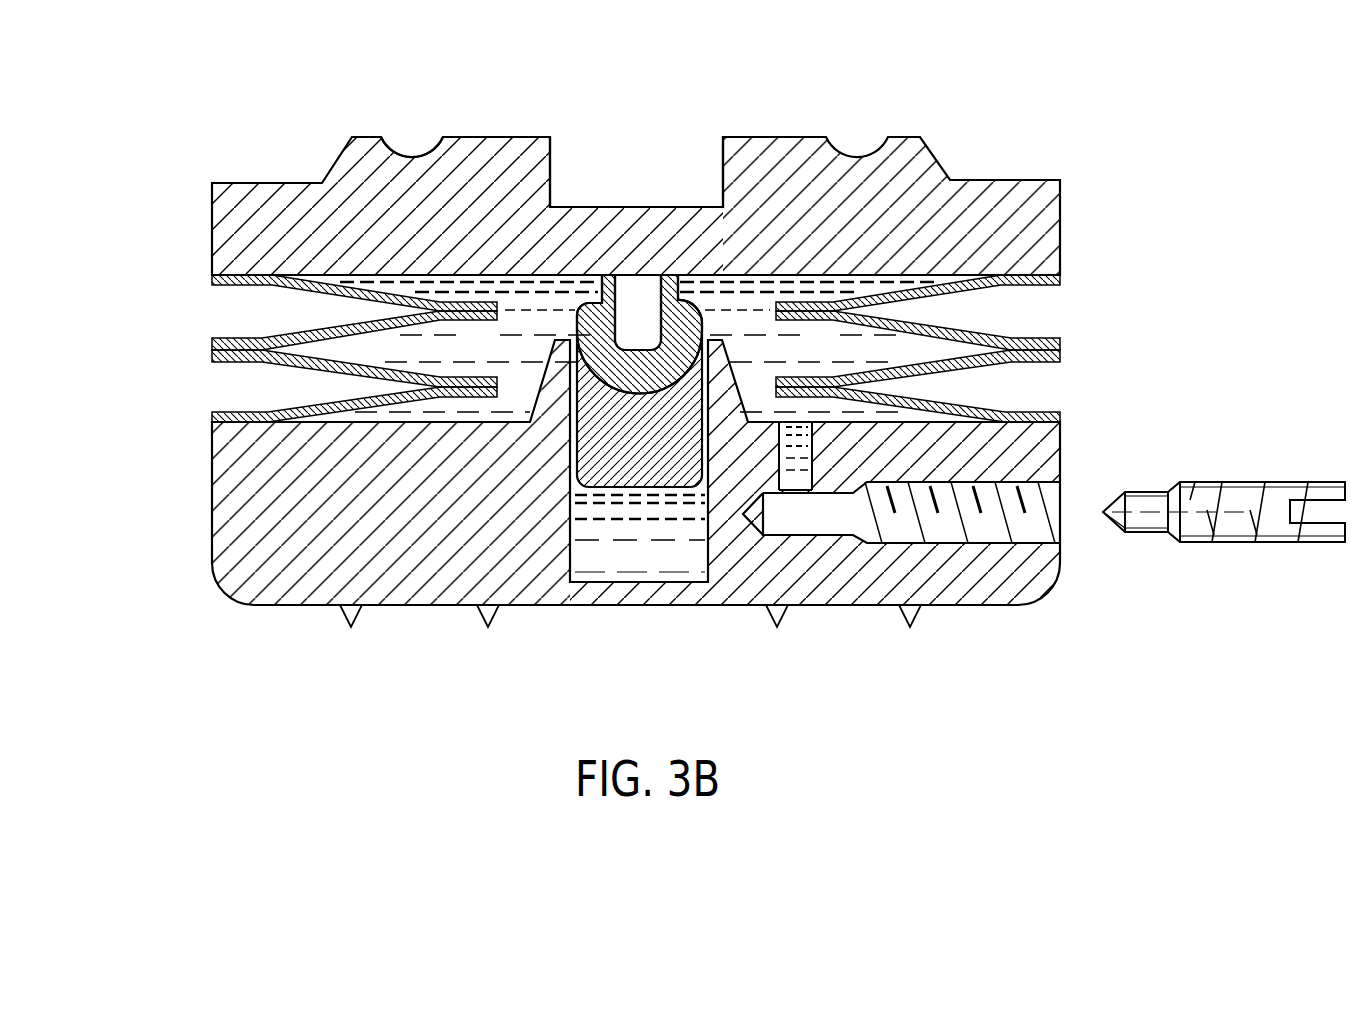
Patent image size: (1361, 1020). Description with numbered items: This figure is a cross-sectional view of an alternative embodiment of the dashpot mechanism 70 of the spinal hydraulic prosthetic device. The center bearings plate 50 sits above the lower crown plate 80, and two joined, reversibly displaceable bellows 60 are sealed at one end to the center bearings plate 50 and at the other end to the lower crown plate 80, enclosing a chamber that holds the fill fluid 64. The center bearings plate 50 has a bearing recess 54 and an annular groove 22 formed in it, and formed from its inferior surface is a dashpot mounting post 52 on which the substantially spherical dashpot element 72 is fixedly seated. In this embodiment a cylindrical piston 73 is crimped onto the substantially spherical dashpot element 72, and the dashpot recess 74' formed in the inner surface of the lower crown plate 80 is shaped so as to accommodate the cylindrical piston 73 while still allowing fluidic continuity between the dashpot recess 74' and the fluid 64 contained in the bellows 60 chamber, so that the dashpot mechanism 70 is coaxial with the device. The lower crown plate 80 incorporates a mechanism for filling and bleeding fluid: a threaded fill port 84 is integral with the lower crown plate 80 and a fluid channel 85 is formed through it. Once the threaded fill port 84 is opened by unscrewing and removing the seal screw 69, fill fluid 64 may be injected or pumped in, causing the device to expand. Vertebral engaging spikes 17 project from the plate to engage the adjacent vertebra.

The spikes 17 is at (782, 622).
The annular groove 22 is at (417, 137).
The center bearings plate 50 is at (975, 233).
The dashpot mounting post 52 is at (649, 227).
The bearing recess 54 is at (556, 163).
The bellows 60 is at (284, 414).
The fluid 64 is at (1013, 348).
The seal screw 69 is at (1243, 527).
The dashpot mechanism 70 is at (706, 317).
The substantially spherical dashpot element 72 is at (597, 325).
The cylindrical piston 73 is at (625, 487).
The dashpot recess 74' is at (640, 602).
The lower crown plate 80 is at (263, 517).
The threaded fill port 84 is at (983, 523).
The fluid channel 85 is at (792, 463).